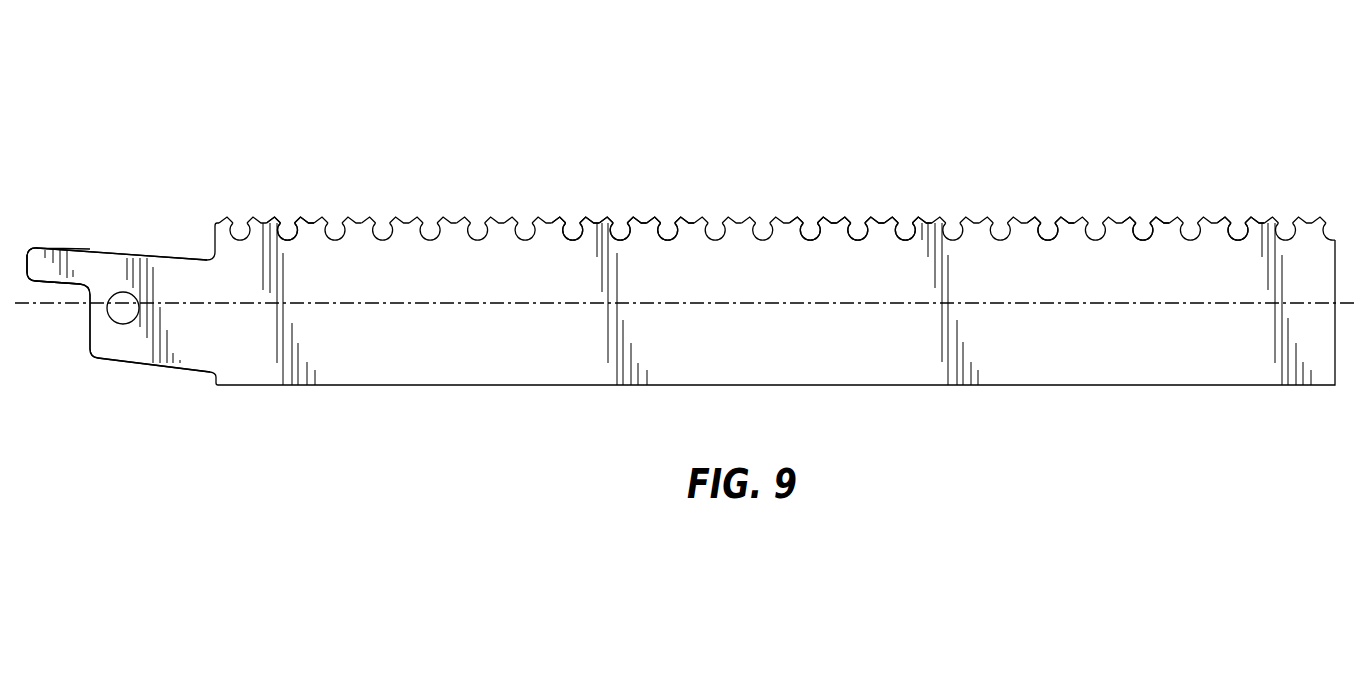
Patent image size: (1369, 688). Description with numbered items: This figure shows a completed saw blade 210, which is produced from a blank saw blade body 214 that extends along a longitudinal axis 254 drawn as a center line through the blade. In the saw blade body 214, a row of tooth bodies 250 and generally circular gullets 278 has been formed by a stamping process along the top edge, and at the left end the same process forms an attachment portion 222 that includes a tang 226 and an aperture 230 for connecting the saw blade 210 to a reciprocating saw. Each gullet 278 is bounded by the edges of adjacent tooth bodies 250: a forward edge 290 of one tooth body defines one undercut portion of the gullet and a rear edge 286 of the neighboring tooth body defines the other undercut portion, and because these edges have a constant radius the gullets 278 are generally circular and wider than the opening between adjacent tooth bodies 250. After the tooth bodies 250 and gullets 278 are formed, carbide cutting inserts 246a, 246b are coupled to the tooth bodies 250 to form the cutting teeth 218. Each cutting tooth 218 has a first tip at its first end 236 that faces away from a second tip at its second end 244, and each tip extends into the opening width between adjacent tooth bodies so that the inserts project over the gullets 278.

The saw blade 210 is at (1002, 107).
The saw blade body 214 is at (900, 350).
The cutting teeth 218 is at (267, 195).
The attachment portion 222 is at (155, 240).
The tang 226 is at (80, 262).
The aperture 230 is at (115, 292).
The first end 236 is at (821, 212).
The second end 244 is at (852, 212).
The cutting insert 246a is at (587, 223).
The cutting insert 246b is at (608, 223).
The tooth bodies 250 is at (312, 223).
The longitudinal axis 254 is at (1180, 303).
The gullets 278 is at (907, 226).
The rear edge 286 is at (1168, 228).
The forward edge 290 is at (1072, 228).